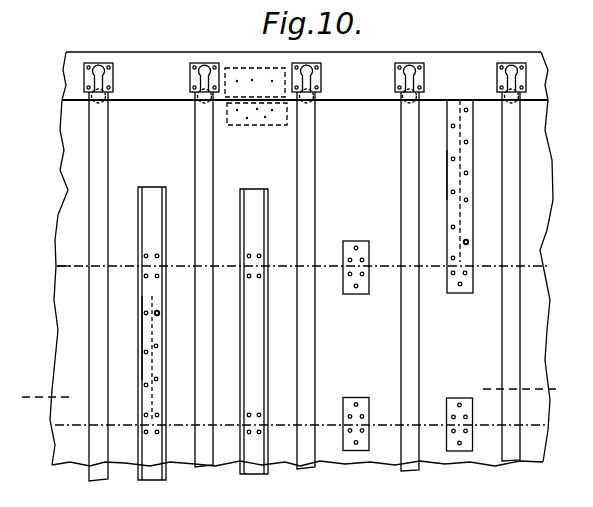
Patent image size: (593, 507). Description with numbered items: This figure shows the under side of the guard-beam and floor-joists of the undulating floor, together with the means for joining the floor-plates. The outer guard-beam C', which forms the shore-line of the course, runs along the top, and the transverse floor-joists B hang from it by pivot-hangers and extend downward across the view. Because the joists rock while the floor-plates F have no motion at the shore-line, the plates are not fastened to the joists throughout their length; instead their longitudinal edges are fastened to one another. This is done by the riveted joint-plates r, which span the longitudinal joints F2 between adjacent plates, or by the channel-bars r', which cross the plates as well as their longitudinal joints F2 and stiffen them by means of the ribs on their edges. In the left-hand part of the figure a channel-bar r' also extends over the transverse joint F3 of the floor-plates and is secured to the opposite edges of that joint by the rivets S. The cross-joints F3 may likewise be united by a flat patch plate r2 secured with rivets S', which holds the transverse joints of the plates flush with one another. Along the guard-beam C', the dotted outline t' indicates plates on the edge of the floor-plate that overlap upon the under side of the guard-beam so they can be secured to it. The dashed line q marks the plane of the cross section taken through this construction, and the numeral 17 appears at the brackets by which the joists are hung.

The floor-plate F is at (60, 185).
The guard-beam C' is at (305, 60).
The bracket 17 is at (290, 53).
The overlapping plate t' is at (251, 74).
The floor-joist B is at (108, 142).
The channel-bar r' is at (203, 333).
The riveted joint-plate r is at (408, 334).
The patch r2 is at (458, 294).
The longitudinal joint F2 is at (68, 268).
The transverse joint F3 is at (152, 324).
The rivet S is at (171, 326).
The rivet S' is at (481, 233).
The section line q is at (287, 398).